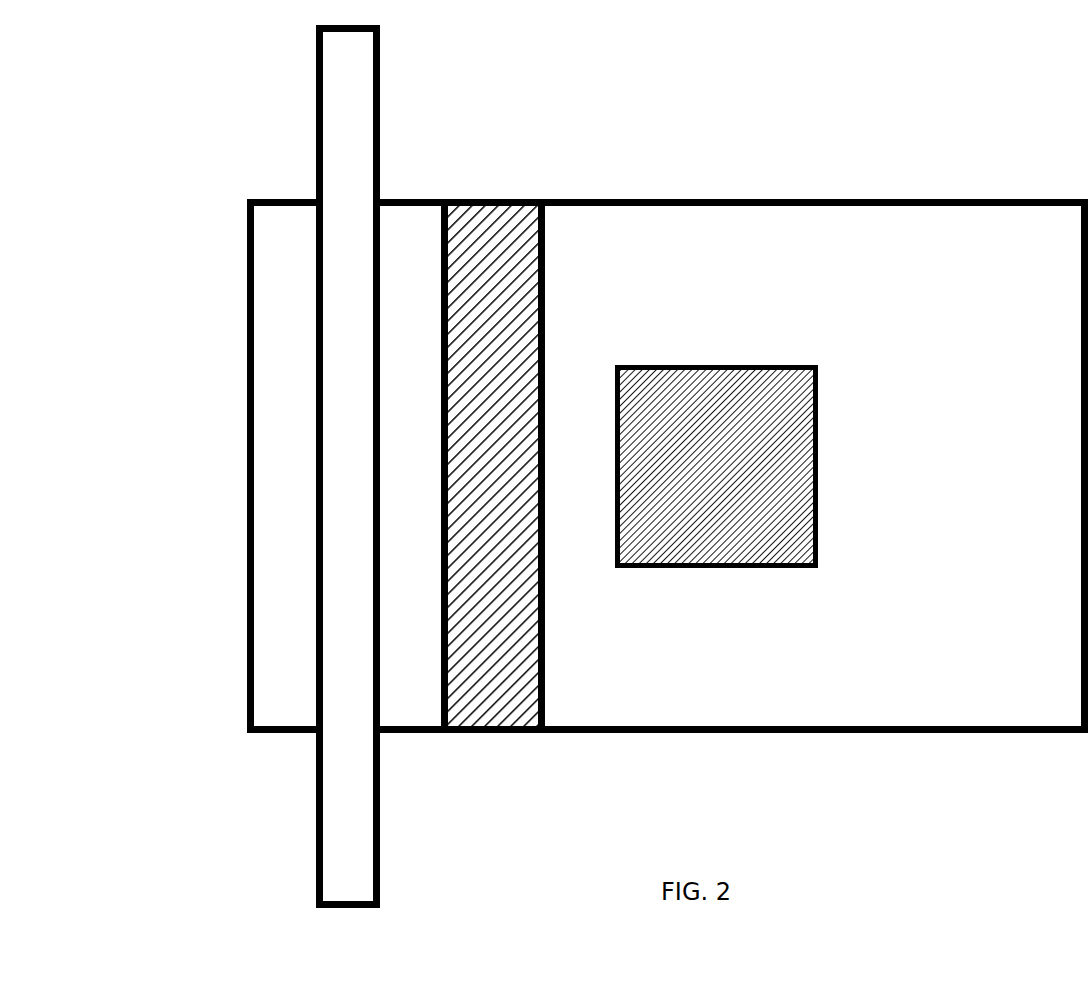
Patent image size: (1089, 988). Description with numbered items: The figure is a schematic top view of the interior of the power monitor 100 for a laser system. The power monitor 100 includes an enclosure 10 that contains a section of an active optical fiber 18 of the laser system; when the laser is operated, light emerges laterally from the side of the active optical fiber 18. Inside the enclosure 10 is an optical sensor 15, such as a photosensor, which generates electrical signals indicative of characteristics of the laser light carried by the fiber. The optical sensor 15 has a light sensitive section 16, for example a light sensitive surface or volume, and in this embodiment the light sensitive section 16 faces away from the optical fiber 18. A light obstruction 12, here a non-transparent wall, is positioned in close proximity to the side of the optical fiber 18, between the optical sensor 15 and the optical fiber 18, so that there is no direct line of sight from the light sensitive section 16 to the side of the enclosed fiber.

The power monitor 100 is at (221, 837).
The enclosure 10 is at (668, 395).
The light obstruction 12 is at (540, 247).
The optical sensor 15 is at (797, 558).
The light sensitive section 16 is at (738, 397).
The active optical fiber 18 is at (295, 542).